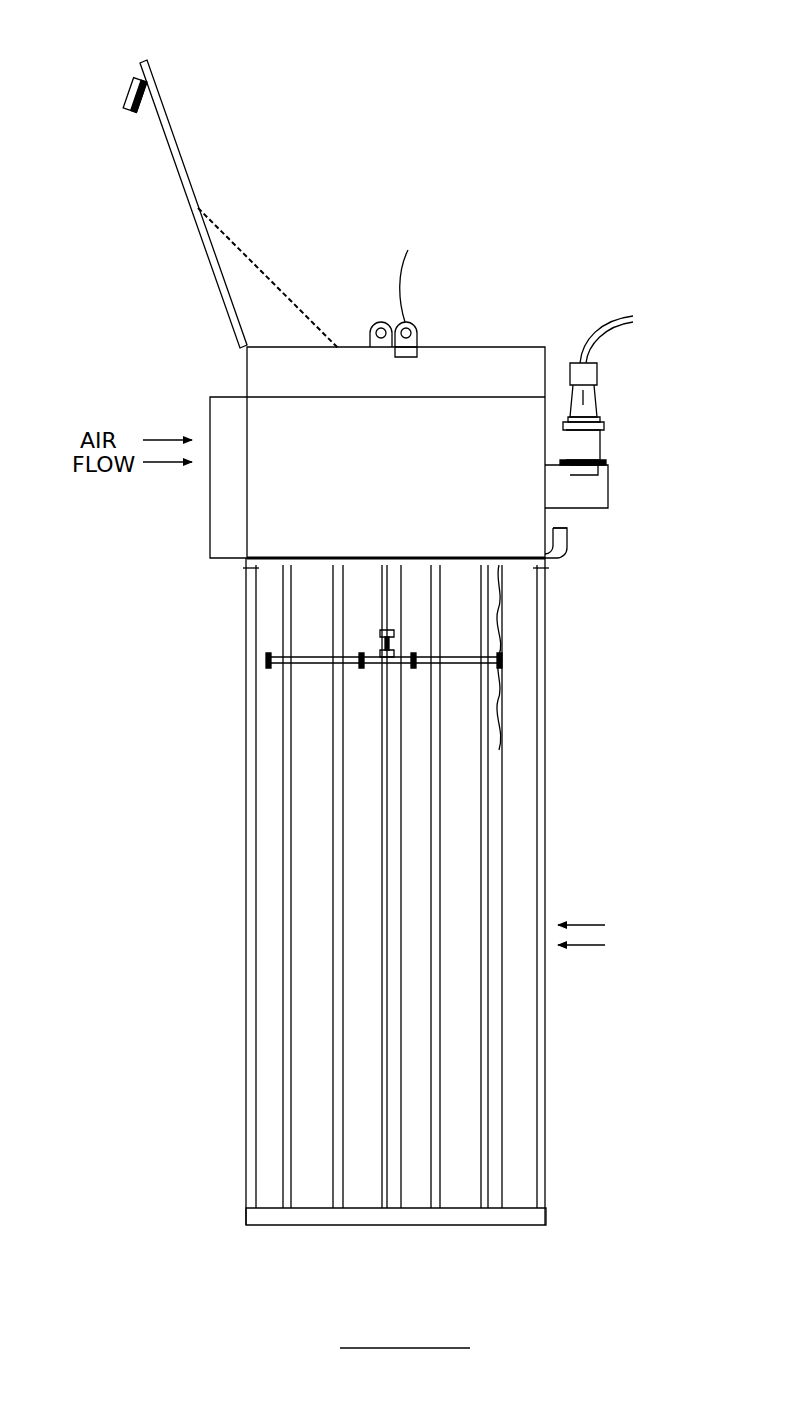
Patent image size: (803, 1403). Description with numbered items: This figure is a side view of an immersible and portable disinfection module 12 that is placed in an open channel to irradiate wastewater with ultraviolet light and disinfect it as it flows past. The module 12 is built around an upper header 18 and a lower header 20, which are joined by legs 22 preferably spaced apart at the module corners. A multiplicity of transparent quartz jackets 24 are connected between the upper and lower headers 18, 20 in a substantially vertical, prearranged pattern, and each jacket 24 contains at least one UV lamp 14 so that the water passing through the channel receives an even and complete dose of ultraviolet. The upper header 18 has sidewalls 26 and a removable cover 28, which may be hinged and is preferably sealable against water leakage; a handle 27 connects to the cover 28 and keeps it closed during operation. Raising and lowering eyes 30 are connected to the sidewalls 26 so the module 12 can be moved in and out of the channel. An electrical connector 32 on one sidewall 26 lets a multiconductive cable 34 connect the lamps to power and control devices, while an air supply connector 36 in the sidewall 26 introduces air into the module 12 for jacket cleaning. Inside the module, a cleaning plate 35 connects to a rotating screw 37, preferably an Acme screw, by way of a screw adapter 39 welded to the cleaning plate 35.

The disinfection module 12 is at (218, 1113).
The UV lamps 14 is at (343, 1117).
The upper header 18 is at (210, 507).
The lower header 20 is at (298, 1225).
The legs 22 is at (246, 1040).
The transparent quartz jackets 24 is at (387, 1180).
The sidewalls 26 is at (393, 508).
The handle 27 is at (126, 85).
The removable cover 28 is at (178, 150).
The raising and lowering eyes 30 is at (380, 322).
The electrical connector 32 is at (595, 394).
The multiconductive cable 34 is at (602, 318).
The cleaning plate 35 is at (447, 665).
The air supply connector 36 is at (567, 538).
The rotating screw 37 is at (380, 752).
The screw adapter 39 is at (380, 636).